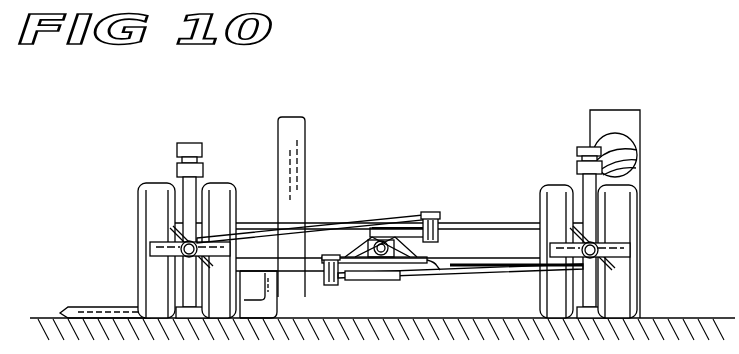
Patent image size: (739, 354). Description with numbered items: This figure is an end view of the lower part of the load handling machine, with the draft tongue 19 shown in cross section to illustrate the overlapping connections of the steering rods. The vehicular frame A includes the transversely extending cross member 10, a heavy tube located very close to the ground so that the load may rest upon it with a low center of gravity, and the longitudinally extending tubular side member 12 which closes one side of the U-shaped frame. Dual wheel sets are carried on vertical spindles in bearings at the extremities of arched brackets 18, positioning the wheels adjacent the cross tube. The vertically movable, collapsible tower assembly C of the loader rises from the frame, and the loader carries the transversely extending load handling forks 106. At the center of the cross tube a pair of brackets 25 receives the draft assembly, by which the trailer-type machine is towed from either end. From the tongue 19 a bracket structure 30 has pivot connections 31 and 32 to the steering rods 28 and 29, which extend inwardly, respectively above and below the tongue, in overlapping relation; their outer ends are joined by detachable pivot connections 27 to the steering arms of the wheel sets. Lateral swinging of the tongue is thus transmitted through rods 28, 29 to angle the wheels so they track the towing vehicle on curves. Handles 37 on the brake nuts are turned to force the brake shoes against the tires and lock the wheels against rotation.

The cross member 10 is at (513, 222).
The side member 12 is at (637, 166).
The arched bracket 18 is at (619, 137).
The draft tongue 19 is at (366, 226).
The bracket 25 is at (403, 275).
The detachable pivot connection 27 is at (182, 241).
The steering rod 28 is at (320, 226).
The steering rod 29 is at (500, 278).
The bracket structure 30 is at (393, 220).
The pivot connection 31 is at (438, 212).
The pivot connection 32 is at (337, 284).
The handle 37 is at (172, 232).
The load handling fork 106 is at (110, 306).
The vehicular frame A is at (645, 127).
The tower assembly C is at (308, 137).